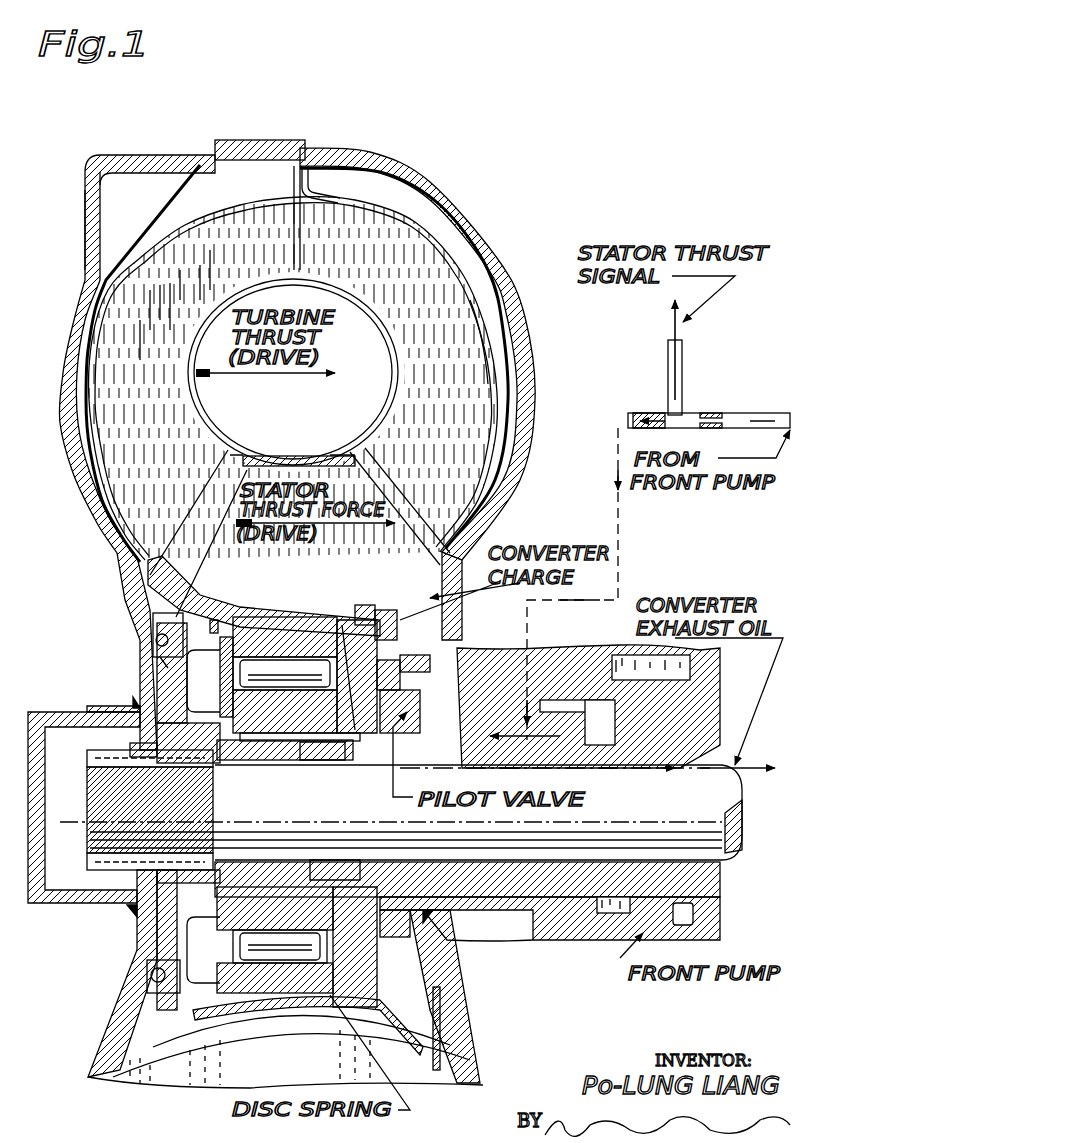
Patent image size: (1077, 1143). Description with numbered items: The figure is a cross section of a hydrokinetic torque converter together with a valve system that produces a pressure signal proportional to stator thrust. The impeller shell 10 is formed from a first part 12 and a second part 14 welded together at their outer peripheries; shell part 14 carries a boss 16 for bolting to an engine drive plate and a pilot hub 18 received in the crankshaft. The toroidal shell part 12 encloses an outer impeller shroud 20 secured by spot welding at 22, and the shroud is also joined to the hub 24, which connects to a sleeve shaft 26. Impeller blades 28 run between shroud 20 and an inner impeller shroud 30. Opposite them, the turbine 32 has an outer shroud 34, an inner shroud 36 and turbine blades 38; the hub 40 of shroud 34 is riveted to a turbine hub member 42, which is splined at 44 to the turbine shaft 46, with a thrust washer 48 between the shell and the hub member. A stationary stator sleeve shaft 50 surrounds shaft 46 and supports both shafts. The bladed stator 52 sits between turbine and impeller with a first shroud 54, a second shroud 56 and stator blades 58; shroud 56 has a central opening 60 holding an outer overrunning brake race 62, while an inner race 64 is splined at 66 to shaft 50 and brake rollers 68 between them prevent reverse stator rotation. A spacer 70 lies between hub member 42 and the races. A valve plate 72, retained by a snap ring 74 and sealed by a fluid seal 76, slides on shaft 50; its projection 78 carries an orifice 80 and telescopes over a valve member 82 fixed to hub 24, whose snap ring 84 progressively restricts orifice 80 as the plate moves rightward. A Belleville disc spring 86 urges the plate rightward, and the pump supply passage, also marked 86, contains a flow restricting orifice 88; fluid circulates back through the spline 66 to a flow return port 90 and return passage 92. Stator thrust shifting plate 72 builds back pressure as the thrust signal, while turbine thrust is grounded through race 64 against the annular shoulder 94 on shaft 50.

The impeller shell 10 is at (262, 140).
The first shell part 12 is at (382, 162).
The second shell part 14 is at (130, 155).
The boss 16 is at (86, 218).
The pilot hub 18 is at (48, 708).
The outer impeller shroud 20 is at (415, 200).
The spot weld 22 is at (303, 150).
The hub 24 is at (435, 585).
The sleeve shaft 26 is at (440, 932).
The impeller blades 28 is at (470, 295).
The inner impeller shroud 30 is at (375, 310).
The turbine 32 is at (210, 415).
The outer turbine shroud 34 is at (118, 284).
The inner turbine shroud 36 is at (215, 303).
The turbine blades 38 is at (122, 310).
The hub of outer turbine shroud 40 is at (150, 582).
The turbine hub member 42 is at (265, 760).
The spline 44 is at (110, 857).
The turbine shaft 46 is at (580, 898).
The thrust washer 48 is at (145, 700).
The stator sleeve shaft 50 is at (518, 900).
The bladed stator 52 is at (312, 450).
The first stator shroud 54 is at (272, 455).
The second stator shroud 56 is at (215, 612).
The stator blades 58 is at (222, 517).
The central opening 60 is at (265, 612).
The outer overrunning brake race 62 is at (300, 632).
The inner overrunning brake race 64 is at (252, 722).
The spline 66 is at (300, 735).
The overrunning brake rollers 68 is at (258, 663).
The spacer 70 is at (262, 947).
The valve plate 72 is at (362, 605).
The snap ring 74 is at (386, 612).
The fluid seal 76 is at (362, 742).
The projection 78 is at (445, 668).
The orifice 80 is at (430, 660).
The valve member 82 is at (425, 706).
The snap ring 84 is at (402, 672).
The Belleville disc spring 86 is at (305, 640).
The flow restricting orifice 88 is at (712, 413).
The flow return port 90 is at (325, 760).
The flow return passage 92 is at (598, 765).
The annular shoulder 94 is at (330, 870).